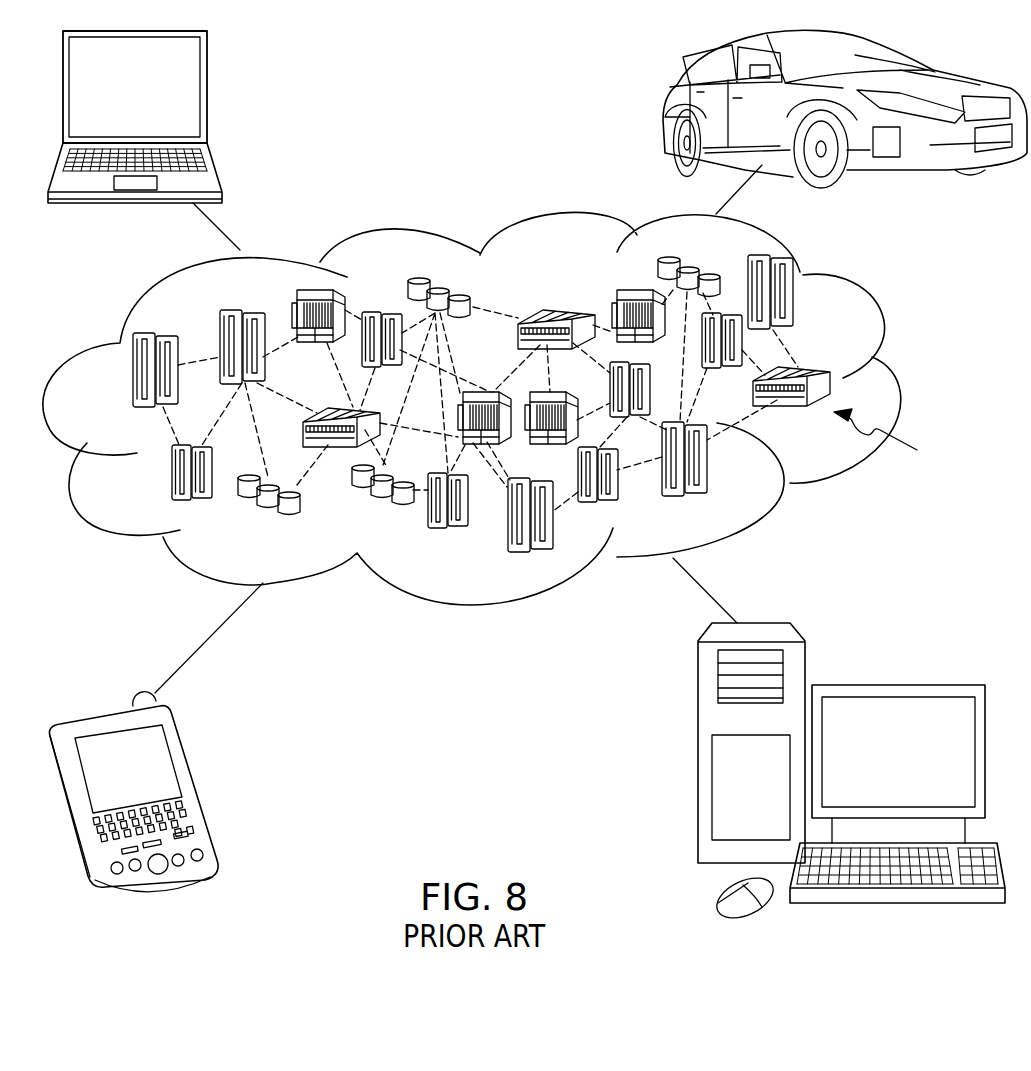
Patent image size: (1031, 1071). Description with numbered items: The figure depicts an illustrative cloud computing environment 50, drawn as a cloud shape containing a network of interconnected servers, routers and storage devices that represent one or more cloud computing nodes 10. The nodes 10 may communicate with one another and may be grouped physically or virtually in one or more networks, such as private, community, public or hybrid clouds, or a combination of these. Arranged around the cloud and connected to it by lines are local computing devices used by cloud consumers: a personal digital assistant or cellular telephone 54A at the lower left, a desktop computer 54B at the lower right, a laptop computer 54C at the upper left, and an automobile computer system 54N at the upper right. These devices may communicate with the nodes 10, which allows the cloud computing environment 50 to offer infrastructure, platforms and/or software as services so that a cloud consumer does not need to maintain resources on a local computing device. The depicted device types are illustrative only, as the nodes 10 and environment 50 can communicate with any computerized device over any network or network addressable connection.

The cloud computing nodes 10 is at (893, 437).
The cloud computing environment 50 is at (893, 381).
The personal digital assistant (PDA) or cellular telephone 54A is at (197, 784).
The desktop computer 54B is at (897, 685).
The laptop computer 54C is at (207, 93).
The automobile computer system 54N is at (665, 110).